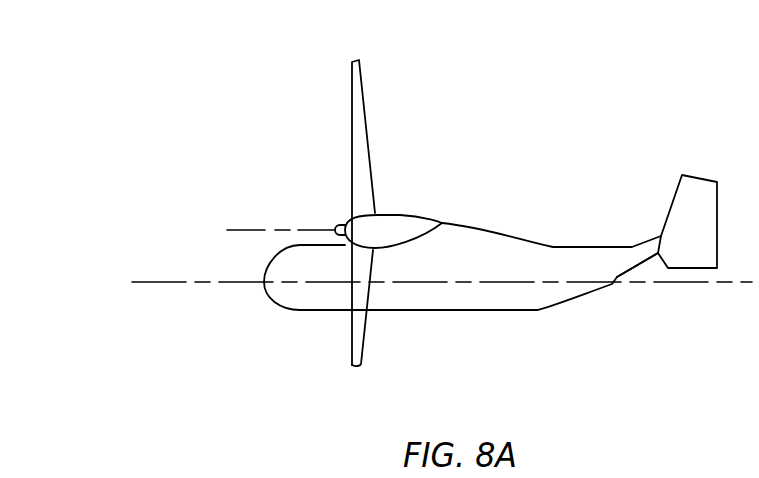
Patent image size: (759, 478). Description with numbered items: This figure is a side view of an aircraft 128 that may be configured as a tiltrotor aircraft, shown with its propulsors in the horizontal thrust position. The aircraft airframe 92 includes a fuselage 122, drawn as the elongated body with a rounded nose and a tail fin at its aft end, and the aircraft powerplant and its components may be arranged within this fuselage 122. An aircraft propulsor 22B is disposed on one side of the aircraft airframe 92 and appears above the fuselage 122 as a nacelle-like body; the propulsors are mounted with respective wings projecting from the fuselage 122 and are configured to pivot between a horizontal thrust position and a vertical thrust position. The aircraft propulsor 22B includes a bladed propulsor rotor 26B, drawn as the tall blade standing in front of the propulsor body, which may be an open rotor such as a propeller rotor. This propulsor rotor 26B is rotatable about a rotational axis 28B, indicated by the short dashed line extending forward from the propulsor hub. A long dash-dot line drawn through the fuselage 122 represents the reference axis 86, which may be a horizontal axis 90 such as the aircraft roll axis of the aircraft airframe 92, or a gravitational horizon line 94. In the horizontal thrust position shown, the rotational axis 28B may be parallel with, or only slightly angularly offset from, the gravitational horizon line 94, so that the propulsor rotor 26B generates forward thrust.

The aircraft 128 is at (442, 218).
The bladed propulsor rotor 26B is at (347, 72).
The aircraft propulsor 22B is at (410, 187).
The rotational axis 28B is at (240, 230).
The reference axis 86 is at (442, 327).
The horizontal axis 90 is at (442, 327).
The gravitational horizon line 94 is at (152, 282).
The aircraft airframe 92 is at (490, 294).
The fuselage 122 is at (435, 313).